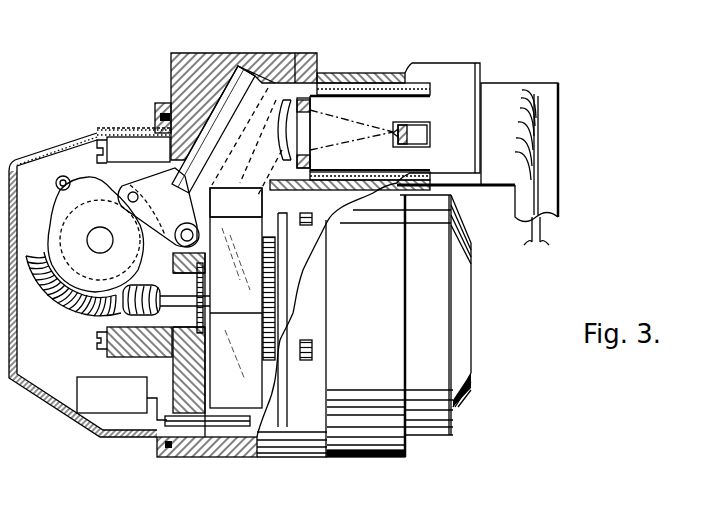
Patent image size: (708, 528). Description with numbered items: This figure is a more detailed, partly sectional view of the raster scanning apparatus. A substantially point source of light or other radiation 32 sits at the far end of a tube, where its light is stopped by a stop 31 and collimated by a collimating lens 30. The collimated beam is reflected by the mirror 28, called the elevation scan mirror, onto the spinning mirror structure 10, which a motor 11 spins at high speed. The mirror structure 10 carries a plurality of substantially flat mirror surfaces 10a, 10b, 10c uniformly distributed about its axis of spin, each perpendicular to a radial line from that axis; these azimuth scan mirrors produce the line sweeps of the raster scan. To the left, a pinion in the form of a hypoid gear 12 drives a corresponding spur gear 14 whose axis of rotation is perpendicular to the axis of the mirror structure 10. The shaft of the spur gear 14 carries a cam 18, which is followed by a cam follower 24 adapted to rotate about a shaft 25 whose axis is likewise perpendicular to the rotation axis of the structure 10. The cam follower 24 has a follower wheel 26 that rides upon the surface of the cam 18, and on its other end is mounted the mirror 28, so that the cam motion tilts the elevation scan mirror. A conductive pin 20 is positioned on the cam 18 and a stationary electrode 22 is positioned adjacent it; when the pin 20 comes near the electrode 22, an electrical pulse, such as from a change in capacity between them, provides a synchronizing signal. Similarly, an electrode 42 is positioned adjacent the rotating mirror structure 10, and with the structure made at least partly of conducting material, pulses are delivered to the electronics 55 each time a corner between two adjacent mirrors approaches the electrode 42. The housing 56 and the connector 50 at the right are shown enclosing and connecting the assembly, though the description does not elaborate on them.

The spinning mirror structure 10 is at (275, 238).
The mirror surface 10a is at (218, 188).
The mirror surface 10b is at (253, 297).
The mirror surface 10c is at (252, 381).
The motor 11 is at (455, 402).
The hypoid gear 12 is at (125, 320).
The spur gear 14 is at (60, 310).
The cam 18 is at (88, 168).
The conductive pin 20 is at (62, 216).
The stationary electrode 22 is at (58, 179).
The cam follower 24 is at (157, 187).
The shaft 25 is at (199, 236).
The follower wheel 26 is at (97, 133).
The mirror 28 is at (227, 108).
The collimating lens 30 is at (297, 132).
The stop 31 is at (321, 93).
The source of light 32 is at (395, 122).
The electrode 42 is at (213, 427).
The connector 50 is at (513, 112).
The electronics 55 is at (78, 392).
The housing 56 is at (70, 426).